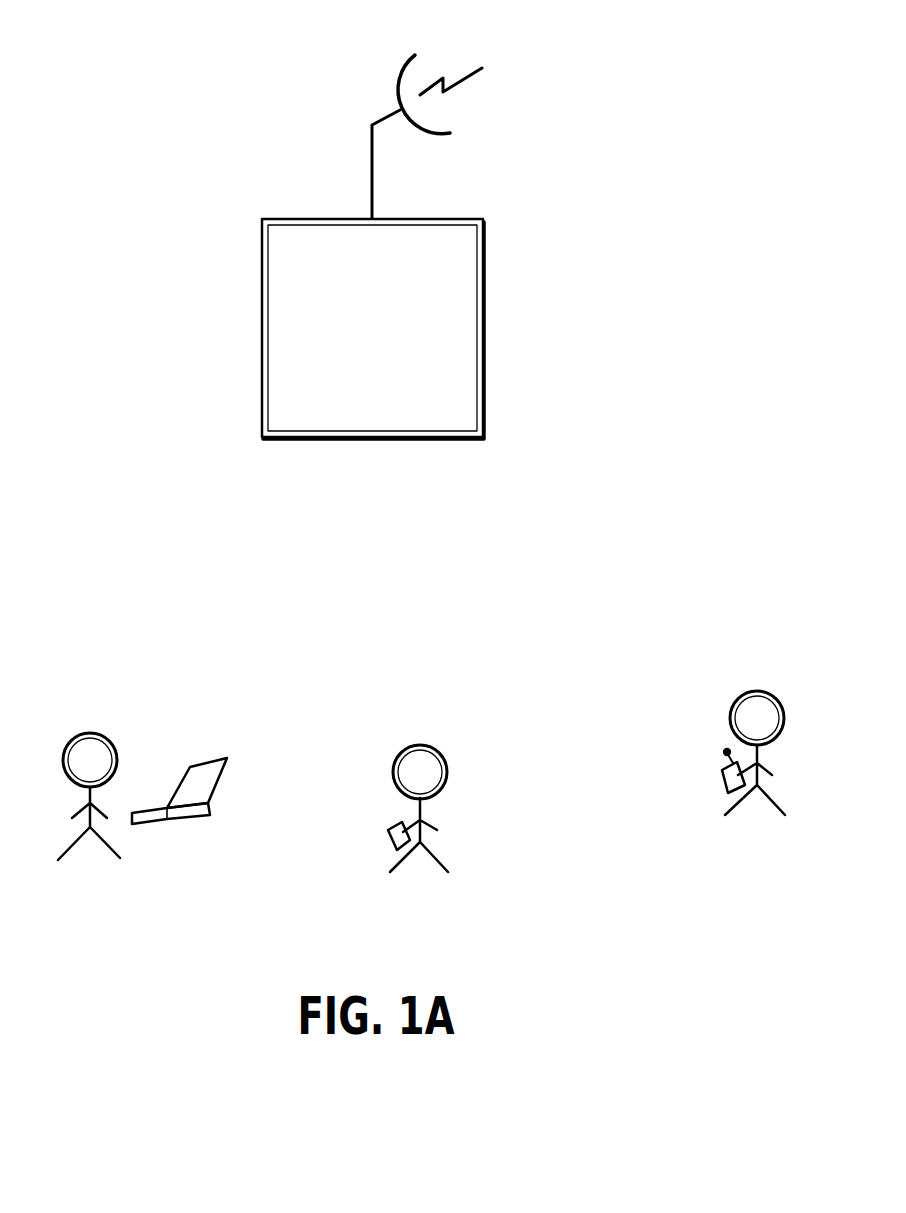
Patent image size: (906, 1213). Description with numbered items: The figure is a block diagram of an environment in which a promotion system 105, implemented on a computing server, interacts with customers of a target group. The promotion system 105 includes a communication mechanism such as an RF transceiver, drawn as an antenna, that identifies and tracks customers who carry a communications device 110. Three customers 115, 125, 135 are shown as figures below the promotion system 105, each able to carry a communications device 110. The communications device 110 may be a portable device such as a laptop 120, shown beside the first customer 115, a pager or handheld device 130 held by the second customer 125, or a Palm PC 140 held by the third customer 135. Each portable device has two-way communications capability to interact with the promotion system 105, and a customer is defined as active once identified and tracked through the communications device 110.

The promotion system 105 is at (260, 258).
The communications device 110 is at (402, 70).
The customer 115 is at (75, 738).
The laptop 120 is at (190, 767).
The customer 125 is at (402, 750).
The mobile device 130 is at (388, 840).
The customer 135 is at (735, 692).
The Palm PC 140 is at (722, 782).